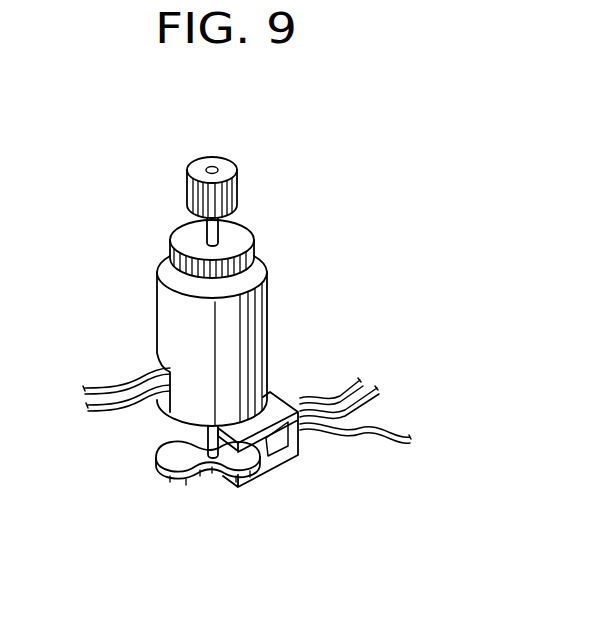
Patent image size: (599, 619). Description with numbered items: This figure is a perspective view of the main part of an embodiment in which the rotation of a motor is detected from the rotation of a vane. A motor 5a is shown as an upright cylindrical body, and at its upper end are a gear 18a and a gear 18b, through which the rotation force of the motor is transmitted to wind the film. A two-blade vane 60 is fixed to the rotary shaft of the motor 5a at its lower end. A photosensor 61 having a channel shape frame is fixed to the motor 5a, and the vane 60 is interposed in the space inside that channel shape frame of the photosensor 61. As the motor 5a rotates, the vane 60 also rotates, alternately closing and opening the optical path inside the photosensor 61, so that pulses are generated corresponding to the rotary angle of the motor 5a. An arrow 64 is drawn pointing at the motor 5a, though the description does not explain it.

The gear 18b is at (218, 162).
The gear 18a is at (238, 238).
The motor 5a is at (265, 290).
The direction arrow 64 is at (277, 330).
The photosensor 61 is at (283, 452).
The two-blade vane 60 is at (182, 463).